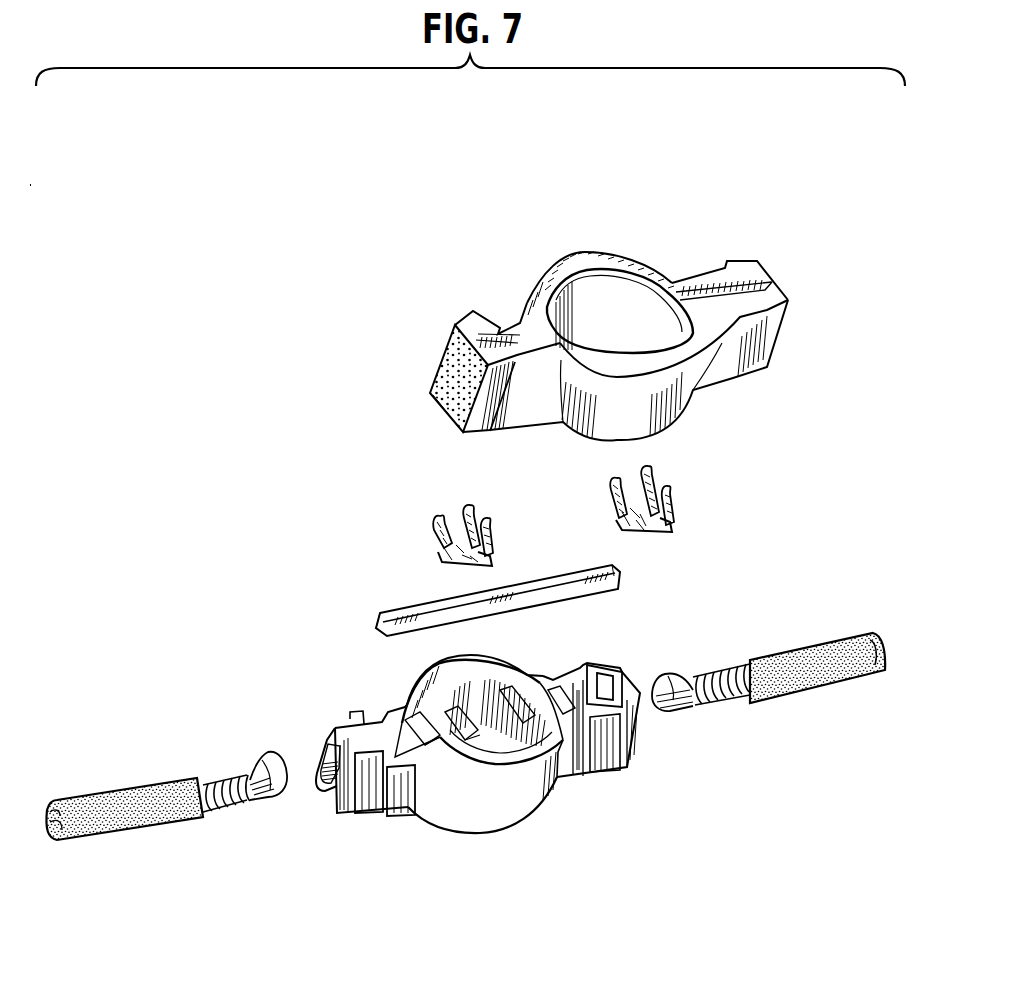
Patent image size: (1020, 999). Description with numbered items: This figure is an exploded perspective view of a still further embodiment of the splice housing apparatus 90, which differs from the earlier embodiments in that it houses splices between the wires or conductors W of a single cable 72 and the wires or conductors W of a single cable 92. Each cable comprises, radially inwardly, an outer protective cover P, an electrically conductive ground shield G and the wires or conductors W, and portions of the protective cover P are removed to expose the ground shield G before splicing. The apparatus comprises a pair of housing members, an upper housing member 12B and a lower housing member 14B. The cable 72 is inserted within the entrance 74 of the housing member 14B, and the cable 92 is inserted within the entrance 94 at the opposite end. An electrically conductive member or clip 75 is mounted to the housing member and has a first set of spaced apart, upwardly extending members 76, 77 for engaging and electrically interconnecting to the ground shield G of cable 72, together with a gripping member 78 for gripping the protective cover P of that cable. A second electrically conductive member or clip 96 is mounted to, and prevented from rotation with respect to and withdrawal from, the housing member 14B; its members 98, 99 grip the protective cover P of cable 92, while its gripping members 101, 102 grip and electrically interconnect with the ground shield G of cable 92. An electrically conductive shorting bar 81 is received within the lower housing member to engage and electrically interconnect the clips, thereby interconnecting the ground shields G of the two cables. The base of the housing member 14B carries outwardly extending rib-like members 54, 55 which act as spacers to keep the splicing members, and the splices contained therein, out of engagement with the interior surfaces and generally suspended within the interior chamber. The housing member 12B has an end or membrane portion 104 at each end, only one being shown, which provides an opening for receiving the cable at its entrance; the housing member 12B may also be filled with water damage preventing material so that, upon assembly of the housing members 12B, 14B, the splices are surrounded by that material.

The housing member 12B is at (616, 266).
The housing member 14B is at (545, 806).
The end or membrane portion 104 is at (445, 383).
The splice housing apparatus 90 is at (800, 478).
The electrically conductive member or clip 75 is at (430, 550).
The entrance 74 is at (438, 526).
The upwardly extending member 77 is at (468, 516).
The upwardly extending member 76 is at (492, 528).
The gripping member 78 is at (450, 565).
The electrically conductive member or clip 96 is at (668, 527).
The gripping member 98 is at (650, 478).
The gripping member 99 is at (674, 490).
The gripping member 101 is at (620, 496).
The gripping member 102 is at (626, 526).
The electrically conductive shorting bar 81 is at (507, 600).
The rib-like member 54 is at (464, 666).
The rib-like member 55 is at (518, 676).
The entrance 94 is at (618, 670).
The cable 72 is at (83, 804).
The cable 92 is at (845, 648).
The outer protective cover P is at (148, 790).
The electrically conductive ground shield G is at (215, 782).
The wires or conductors W is at (273, 760).